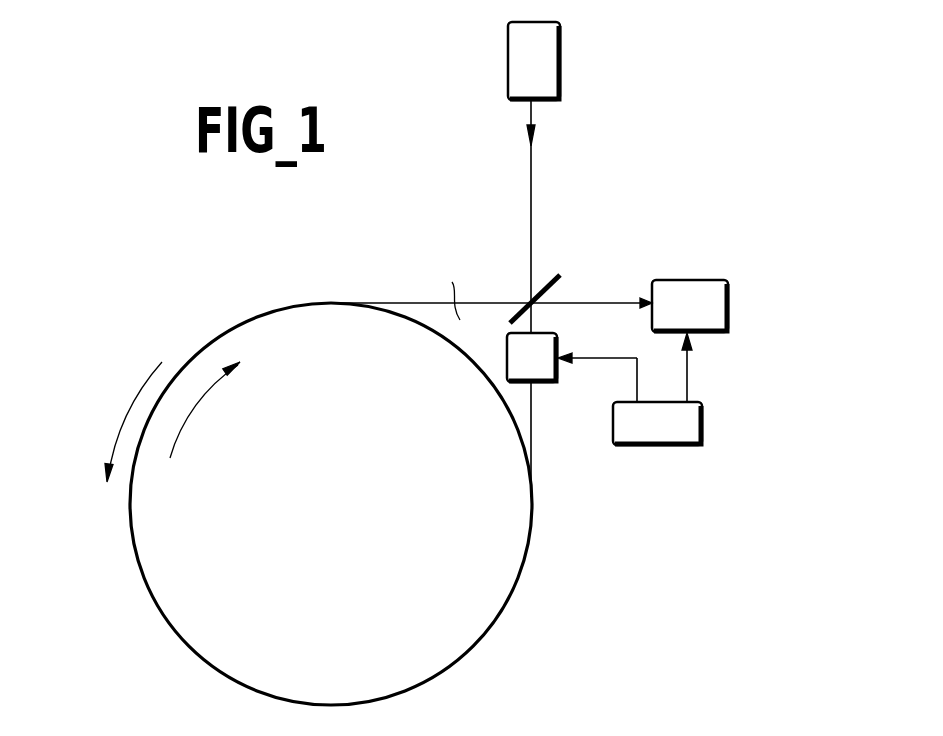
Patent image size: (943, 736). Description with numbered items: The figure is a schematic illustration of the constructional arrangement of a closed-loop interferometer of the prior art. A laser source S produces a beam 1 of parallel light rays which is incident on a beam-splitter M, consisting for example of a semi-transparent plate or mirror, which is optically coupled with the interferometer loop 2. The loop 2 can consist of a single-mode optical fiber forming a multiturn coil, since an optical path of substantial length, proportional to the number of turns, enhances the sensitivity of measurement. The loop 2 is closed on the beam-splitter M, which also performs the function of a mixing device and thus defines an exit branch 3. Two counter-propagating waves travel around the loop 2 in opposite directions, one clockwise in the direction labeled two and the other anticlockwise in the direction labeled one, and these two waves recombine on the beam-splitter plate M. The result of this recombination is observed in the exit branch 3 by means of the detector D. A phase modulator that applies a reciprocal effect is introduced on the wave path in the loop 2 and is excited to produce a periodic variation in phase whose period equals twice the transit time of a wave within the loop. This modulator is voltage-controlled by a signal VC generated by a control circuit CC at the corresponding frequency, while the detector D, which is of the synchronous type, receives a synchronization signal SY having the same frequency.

The laser source S is at (560, 62).
The beam 1 is at (531, 168).
The interferometer loop 2 is at (527, 556).
The beam-splitter M is at (562, 282).
The exit branch 3 is at (604, 303).
The detector D is at (688, 280).
The control voltage signal VC is at (612, 358).
The synchronization signal SY is at (688, 358).
The control circuit CC is at (645, 447).